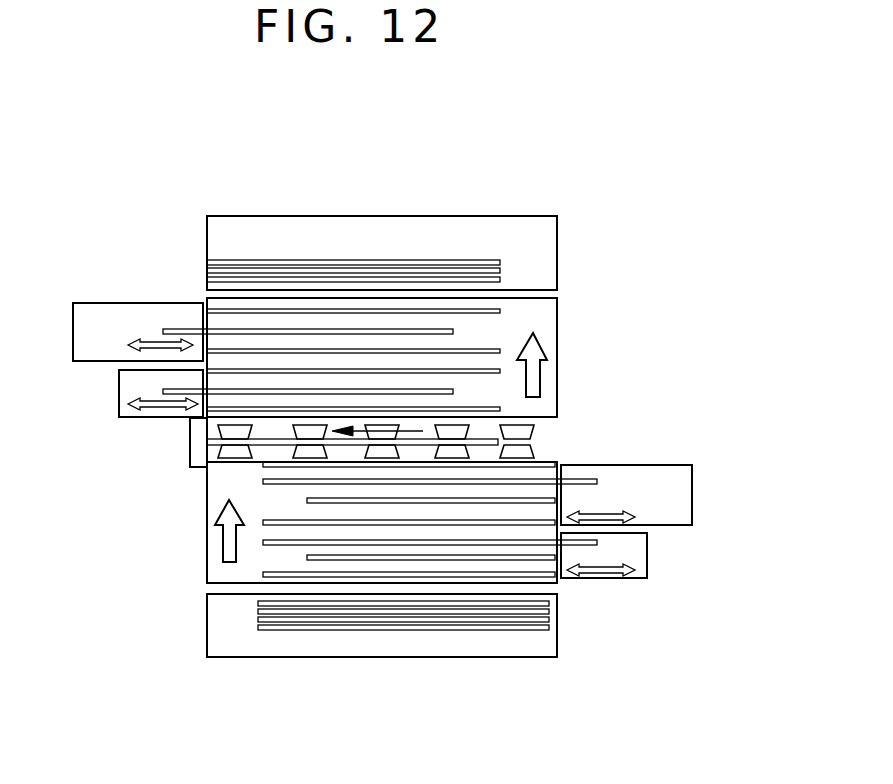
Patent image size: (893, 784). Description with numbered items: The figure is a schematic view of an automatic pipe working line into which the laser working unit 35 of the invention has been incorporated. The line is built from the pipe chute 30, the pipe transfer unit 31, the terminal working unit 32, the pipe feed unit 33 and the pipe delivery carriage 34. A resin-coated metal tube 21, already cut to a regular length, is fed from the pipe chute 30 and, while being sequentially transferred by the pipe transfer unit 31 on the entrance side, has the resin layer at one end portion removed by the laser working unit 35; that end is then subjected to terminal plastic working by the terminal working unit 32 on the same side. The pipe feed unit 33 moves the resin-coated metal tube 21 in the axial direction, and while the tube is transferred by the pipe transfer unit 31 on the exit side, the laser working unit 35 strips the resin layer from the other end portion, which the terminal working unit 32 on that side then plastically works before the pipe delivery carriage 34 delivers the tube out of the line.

The resin-coated metal tube 21 is at (452, 630).
The pipe chute 30 is at (215, 617).
The pipe transfer unit 31 is at (538, 314).
The terminal working unit 32 is at (120, 315).
The pipe feed unit 33 is at (230, 448).
The pipe delivery carriage 34 is at (383, 238).
The laser working unit 35 is at (130, 388).